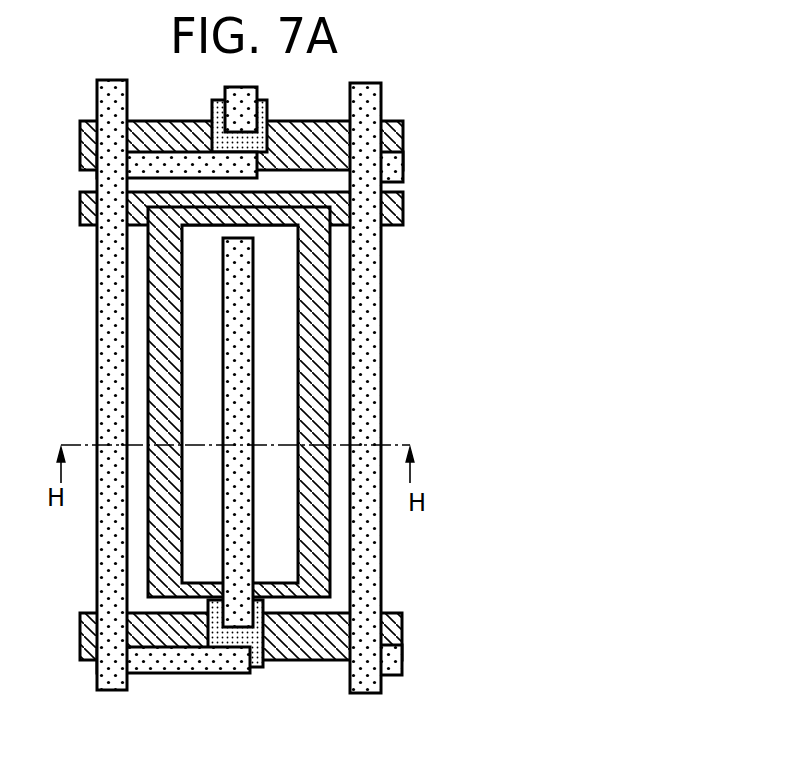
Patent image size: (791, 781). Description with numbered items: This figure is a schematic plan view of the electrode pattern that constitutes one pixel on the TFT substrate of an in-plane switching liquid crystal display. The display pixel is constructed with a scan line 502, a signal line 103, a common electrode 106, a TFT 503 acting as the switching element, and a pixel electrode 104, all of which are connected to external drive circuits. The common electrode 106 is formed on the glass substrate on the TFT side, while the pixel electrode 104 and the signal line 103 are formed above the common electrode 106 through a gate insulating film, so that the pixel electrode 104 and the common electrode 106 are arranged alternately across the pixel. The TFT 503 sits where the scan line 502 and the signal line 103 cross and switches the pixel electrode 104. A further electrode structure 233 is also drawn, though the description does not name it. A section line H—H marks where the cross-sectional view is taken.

The signal line 103 is at (367, 395).
The pixel electrode 104 is at (240, 315).
The common electrode 106 is at (388, 215).
The U-shaped electrode 233 is at (305, 548).
The scan line 502 is at (297, 641).
The TFT 503 is at (227, 658).